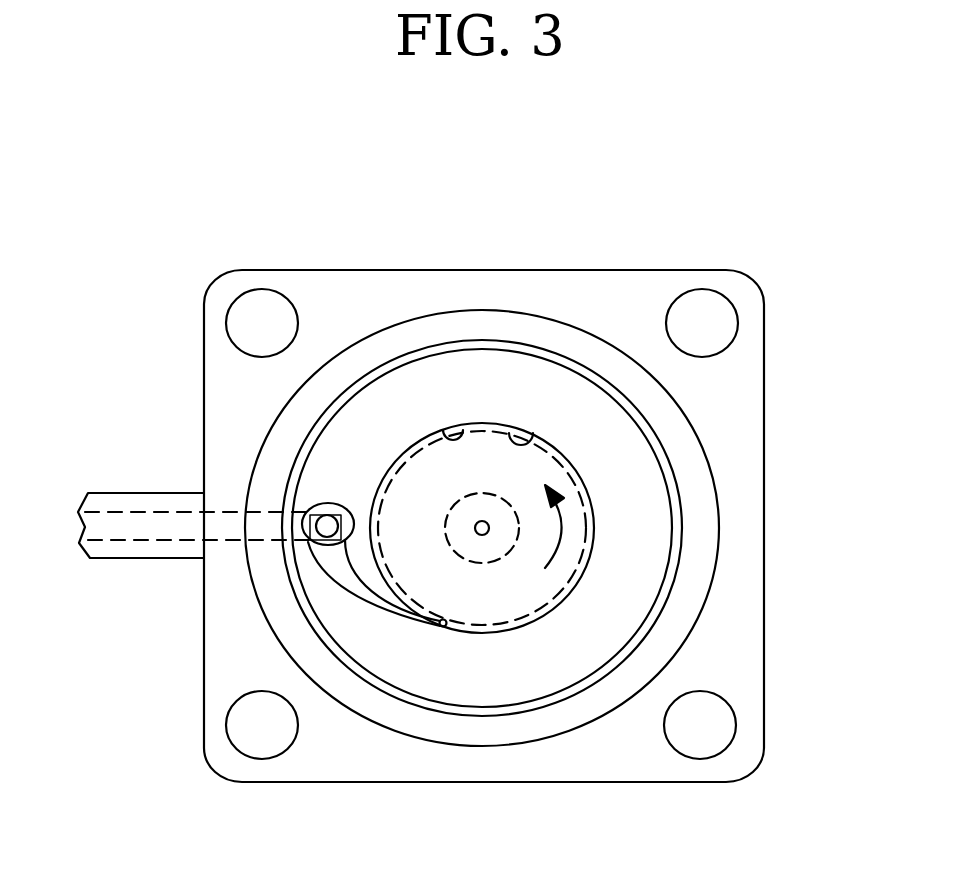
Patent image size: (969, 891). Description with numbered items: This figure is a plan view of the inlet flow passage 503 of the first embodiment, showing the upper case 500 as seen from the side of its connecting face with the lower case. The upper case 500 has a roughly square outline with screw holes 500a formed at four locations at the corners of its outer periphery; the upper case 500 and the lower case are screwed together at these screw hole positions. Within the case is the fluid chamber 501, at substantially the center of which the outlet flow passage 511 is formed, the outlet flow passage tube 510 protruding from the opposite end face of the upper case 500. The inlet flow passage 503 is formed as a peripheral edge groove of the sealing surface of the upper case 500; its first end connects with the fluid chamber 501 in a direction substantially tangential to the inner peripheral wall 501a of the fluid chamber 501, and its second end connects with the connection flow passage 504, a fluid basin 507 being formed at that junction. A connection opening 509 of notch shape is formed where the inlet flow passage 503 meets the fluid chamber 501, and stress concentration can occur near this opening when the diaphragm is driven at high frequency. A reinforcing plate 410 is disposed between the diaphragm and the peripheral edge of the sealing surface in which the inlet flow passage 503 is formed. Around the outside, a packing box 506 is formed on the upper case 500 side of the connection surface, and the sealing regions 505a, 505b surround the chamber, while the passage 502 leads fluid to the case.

The upper case 500 is at (763, 395).
The screw holes 500a is at (248, 297).
The reinforcing plate 410 is at (466, 425).
The inner peripheral wall 501a is at (530, 440).
The fluid chamber 501 is at (476, 488).
The inlet pipe 502 is at (113, 560).
The connection flow passage 504 is at (160, 533).
The partition wall 505a is at (756, 686).
The partition wall 505b is at (677, 475).
The packing box 506 is at (702, 538).
The fluid basin 507 is at (308, 510).
The inlet flow passage 503 is at (388, 618).
The connection opening 509 is at (462, 630).
The outlet flow passage tube 510 is at (486, 563).
The outlet flow passage 511 is at (486, 533).